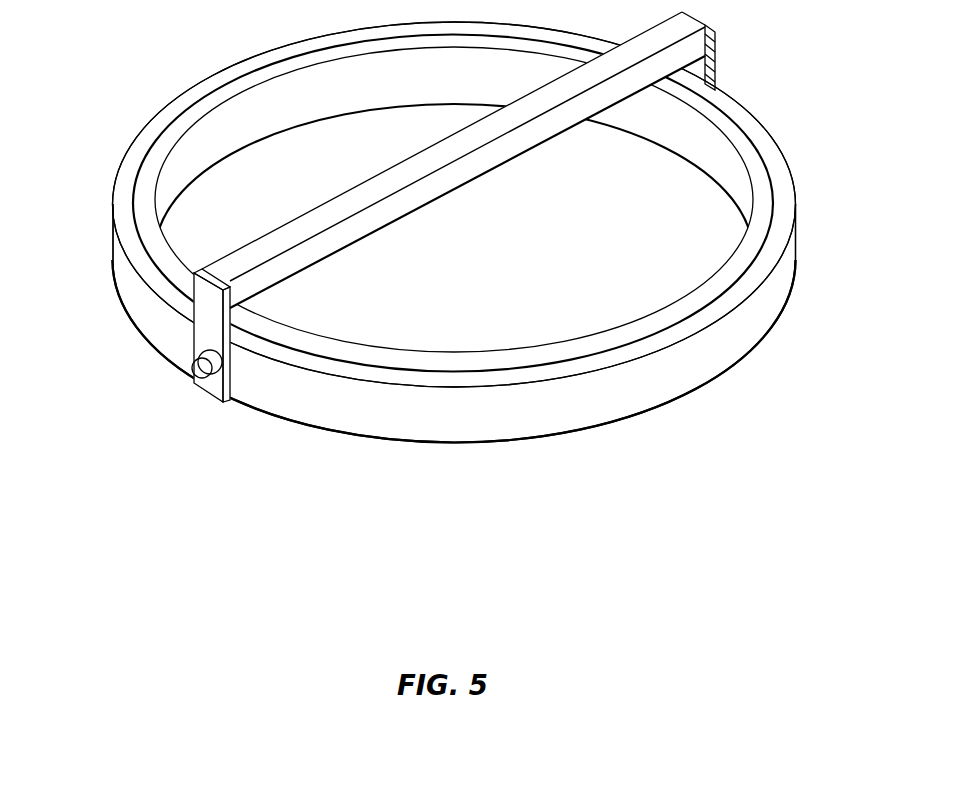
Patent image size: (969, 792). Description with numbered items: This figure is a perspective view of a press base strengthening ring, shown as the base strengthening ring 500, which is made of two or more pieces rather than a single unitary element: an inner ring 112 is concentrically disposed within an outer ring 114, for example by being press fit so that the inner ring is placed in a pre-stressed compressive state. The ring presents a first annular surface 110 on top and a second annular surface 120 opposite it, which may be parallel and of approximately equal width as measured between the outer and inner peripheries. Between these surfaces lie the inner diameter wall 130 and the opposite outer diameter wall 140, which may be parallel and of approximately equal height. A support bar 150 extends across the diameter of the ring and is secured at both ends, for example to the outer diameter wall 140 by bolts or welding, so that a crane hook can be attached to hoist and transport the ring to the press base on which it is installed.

The first annular surface 110 is at (790, 213).
The inner ring 112 is at (763, 190).
The outer ring 114 is at (770, 150).
The second annular surface 120 is at (577, 437).
The inner diameter wall 130 is at (200, 147).
The outer diameter wall 140 is at (715, 352).
The support bar 150 is at (310, 257).
The base strengthening ring 500 is at (453, 262).